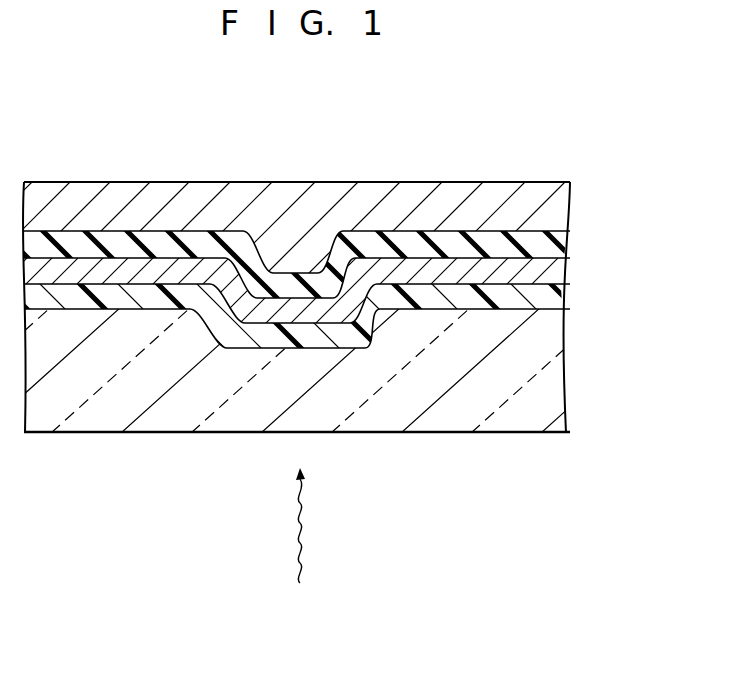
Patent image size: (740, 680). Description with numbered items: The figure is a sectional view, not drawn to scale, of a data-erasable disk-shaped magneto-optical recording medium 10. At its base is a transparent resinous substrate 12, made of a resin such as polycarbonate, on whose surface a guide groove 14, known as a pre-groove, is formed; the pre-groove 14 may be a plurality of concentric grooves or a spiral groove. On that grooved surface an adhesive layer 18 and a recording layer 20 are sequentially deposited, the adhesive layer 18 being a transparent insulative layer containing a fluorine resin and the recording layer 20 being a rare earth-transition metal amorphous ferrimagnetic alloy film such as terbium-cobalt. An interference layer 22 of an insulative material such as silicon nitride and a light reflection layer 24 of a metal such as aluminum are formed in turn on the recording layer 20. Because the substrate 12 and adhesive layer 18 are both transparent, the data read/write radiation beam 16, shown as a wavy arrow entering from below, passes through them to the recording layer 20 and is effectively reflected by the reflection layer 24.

The magneto-optical recording medium 10 is at (502, 178).
The transparent resinous substrate 12 is at (555, 398).
The guide groove 14 is at (311, 349).
The data read/write radiation beam 16 is at (302, 533).
The adhesive layer 18 is at (562, 289).
The recording layer 20 is at (558, 270).
The interference layer 22 is at (562, 238).
The light reflection layer 24 is at (566, 207).